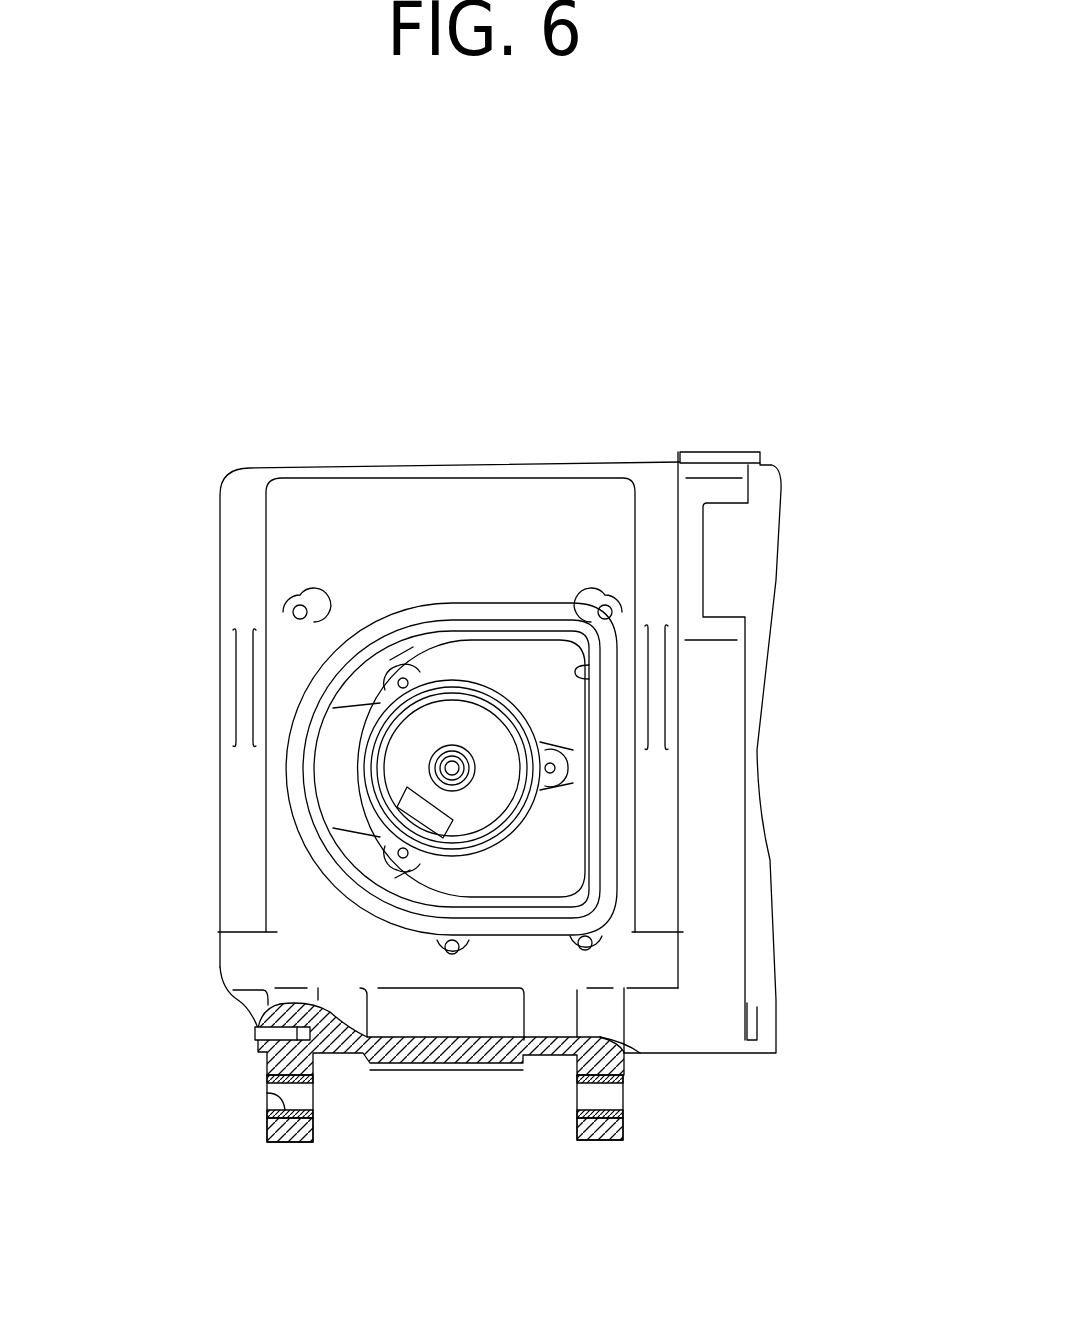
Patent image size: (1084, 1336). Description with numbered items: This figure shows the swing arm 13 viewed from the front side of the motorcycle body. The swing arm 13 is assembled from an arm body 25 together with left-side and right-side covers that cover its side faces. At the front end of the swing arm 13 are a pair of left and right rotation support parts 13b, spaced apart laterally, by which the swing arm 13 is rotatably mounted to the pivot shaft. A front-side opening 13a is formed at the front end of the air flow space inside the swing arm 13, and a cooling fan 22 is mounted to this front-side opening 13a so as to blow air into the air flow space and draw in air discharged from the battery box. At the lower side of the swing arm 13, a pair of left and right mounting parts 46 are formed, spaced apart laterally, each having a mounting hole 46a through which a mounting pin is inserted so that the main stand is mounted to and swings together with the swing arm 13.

The swing arm 13 is at (531, 458).
The front-side opening 13a is at (578, 672).
The rotation support parts 13b is at (243, 689).
The cooling fan 22 is at (497, 802).
The arm body 25 is at (397, 518).
The mounting parts 46 is at (283, 1147).
The mounting holes 46a is at (267, 1093).